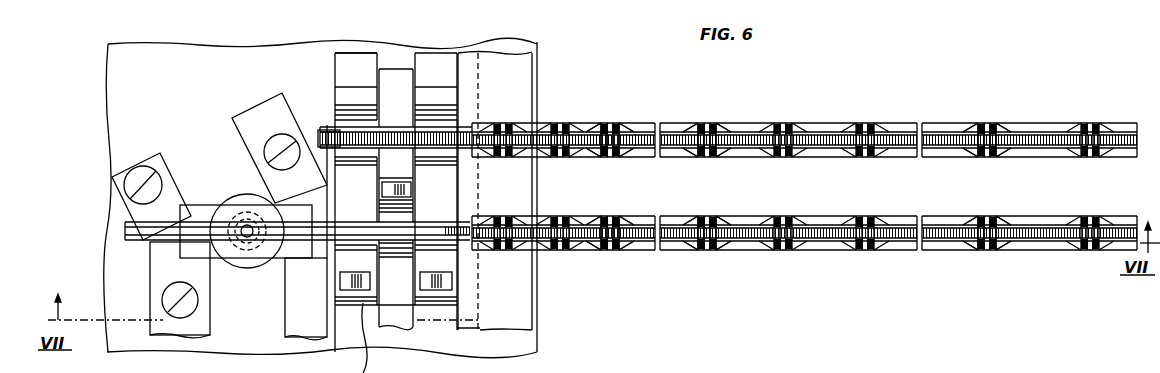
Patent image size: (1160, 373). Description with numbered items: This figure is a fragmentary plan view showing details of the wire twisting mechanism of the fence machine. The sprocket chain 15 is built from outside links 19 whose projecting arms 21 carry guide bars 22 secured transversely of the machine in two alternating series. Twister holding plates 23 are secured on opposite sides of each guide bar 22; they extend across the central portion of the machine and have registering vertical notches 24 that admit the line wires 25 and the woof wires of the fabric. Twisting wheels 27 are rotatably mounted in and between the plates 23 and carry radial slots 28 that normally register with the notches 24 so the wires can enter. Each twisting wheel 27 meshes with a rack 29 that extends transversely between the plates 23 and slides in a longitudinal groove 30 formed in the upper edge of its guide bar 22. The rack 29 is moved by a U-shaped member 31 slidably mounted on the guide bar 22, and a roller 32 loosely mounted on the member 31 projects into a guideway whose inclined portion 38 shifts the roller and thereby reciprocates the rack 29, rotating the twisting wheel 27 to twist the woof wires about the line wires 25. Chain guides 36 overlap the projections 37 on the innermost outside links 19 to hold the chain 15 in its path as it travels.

The sprocket chain 15 is at (328, 60).
The outside links 19 is at (447, 194).
The projecting arms 21 is at (400, 164).
The guide bars 22 is at (335, 130).
The twister holding plates 23 is at (1027, 127).
The vertical notches 24 is at (620, 130).
The line wires 25 is at (178, 327).
The twisting wheels 27 is at (699, 158).
The radial slots 28 is at (601, 223).
The rack 29 is at (320, 137).
The longitudinal groove 30 is at (460, 132).
The U-shaped member 31 is at (195, 252).
The roller 32 is at (258, 262).
The chain guides 36 is at (528, 67).
The projections 37 is at (481, 82).
The inclined portion 38 is at (200, 152).